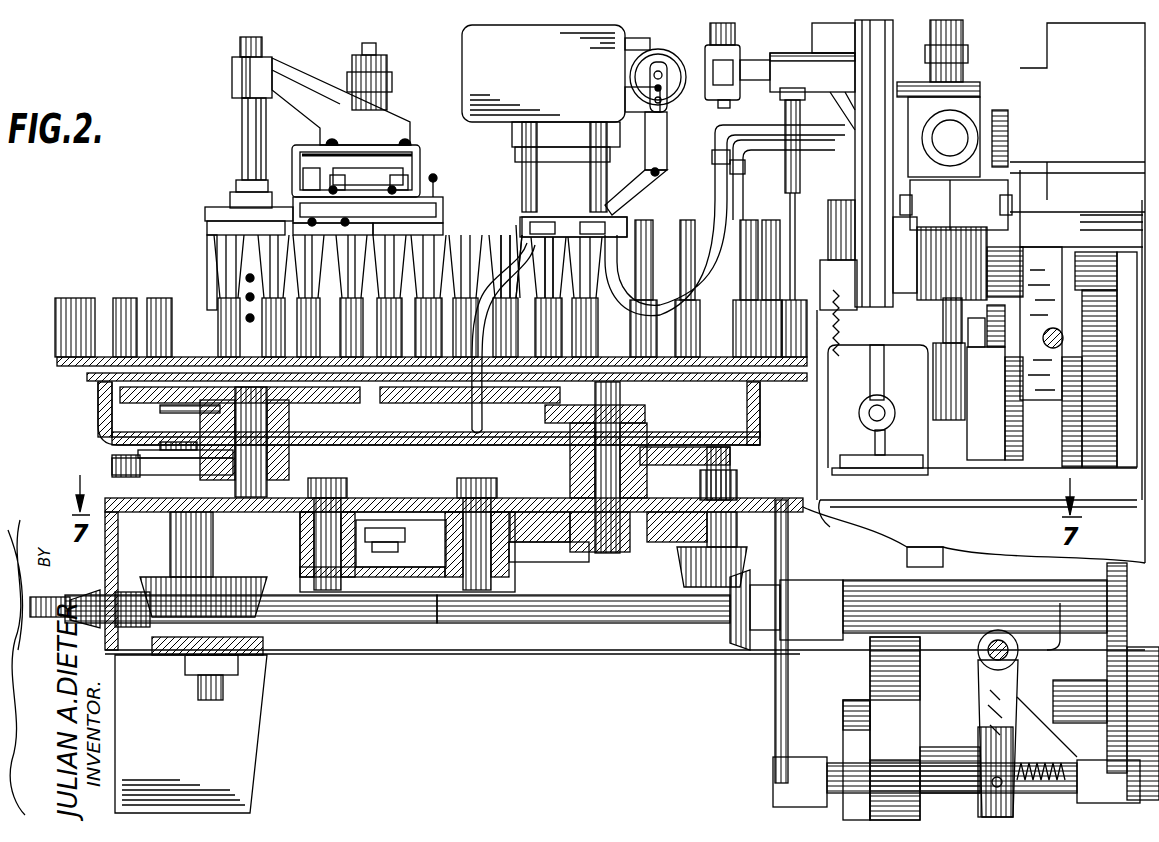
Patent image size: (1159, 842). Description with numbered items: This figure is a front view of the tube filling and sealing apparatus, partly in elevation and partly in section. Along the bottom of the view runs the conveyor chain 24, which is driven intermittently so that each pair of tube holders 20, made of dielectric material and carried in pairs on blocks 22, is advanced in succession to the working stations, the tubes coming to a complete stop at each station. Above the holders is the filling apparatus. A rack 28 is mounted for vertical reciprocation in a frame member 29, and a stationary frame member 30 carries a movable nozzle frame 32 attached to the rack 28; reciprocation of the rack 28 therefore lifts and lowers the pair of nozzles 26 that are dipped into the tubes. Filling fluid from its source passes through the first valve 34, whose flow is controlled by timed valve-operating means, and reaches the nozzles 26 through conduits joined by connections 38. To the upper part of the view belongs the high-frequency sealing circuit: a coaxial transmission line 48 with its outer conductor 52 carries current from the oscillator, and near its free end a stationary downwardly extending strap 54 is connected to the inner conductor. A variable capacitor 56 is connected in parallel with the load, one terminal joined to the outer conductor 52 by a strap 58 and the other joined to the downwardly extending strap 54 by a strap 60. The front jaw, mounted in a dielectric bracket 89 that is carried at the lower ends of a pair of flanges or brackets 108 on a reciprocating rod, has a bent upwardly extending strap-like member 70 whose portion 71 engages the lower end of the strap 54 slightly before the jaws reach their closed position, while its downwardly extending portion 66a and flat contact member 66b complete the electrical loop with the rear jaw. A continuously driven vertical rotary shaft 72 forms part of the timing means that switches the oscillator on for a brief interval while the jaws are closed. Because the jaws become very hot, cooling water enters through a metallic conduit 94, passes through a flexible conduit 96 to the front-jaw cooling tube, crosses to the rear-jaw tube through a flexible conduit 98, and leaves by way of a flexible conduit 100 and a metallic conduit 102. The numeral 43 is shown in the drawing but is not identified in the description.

The tube holders 20 is at (735, 340).
The blocks 22 is at (790, 368).
The conveyor chain 24 is at (130, 403).
The nozzles 26 is at (800, 180).
The rack 28 is at (838, 320).
The frame member 29 is at (835, 423).
The stationary frame member 30 is at (888, 308).
The movable nozzle frame 32 is at (850, 120).
The first valve 34 is at (975, 118).
The connections 38 is at (720, 52).
The bolt 43 is at (992, 115).
The coaxial transmission line 48 is at (682, 95).
The outer conductor 52 is at (632, 62).
The downwardly extending strap 54 is at (667, 140).
The variable capacitor 56 is at (462, 50).
The strap 58 is at (640, 38).
The strap 60 is at (633, 103).
The bent portion of front jaw 66a is at (518, 225).
The flat contact member 66b is at (505, 235).
The upwardly extending strap-like member 70 is at (630, 196).
The portion 71 is at (660, 174).
The vertical rotary shaft 72 is at (730, 458).
The dielectric bracket 89 is at (561, 267).
The metallic conduit 94 is at (750, 127).
The flexible conduit 96 is at (716, 197).
The flexible conduit 98 is at (470, 418).
The flexible conduit 100 is at (743, 198).
The metallic conduit 102 is at (777, 150).
The flanges or brackets 108 is at (590, 204).